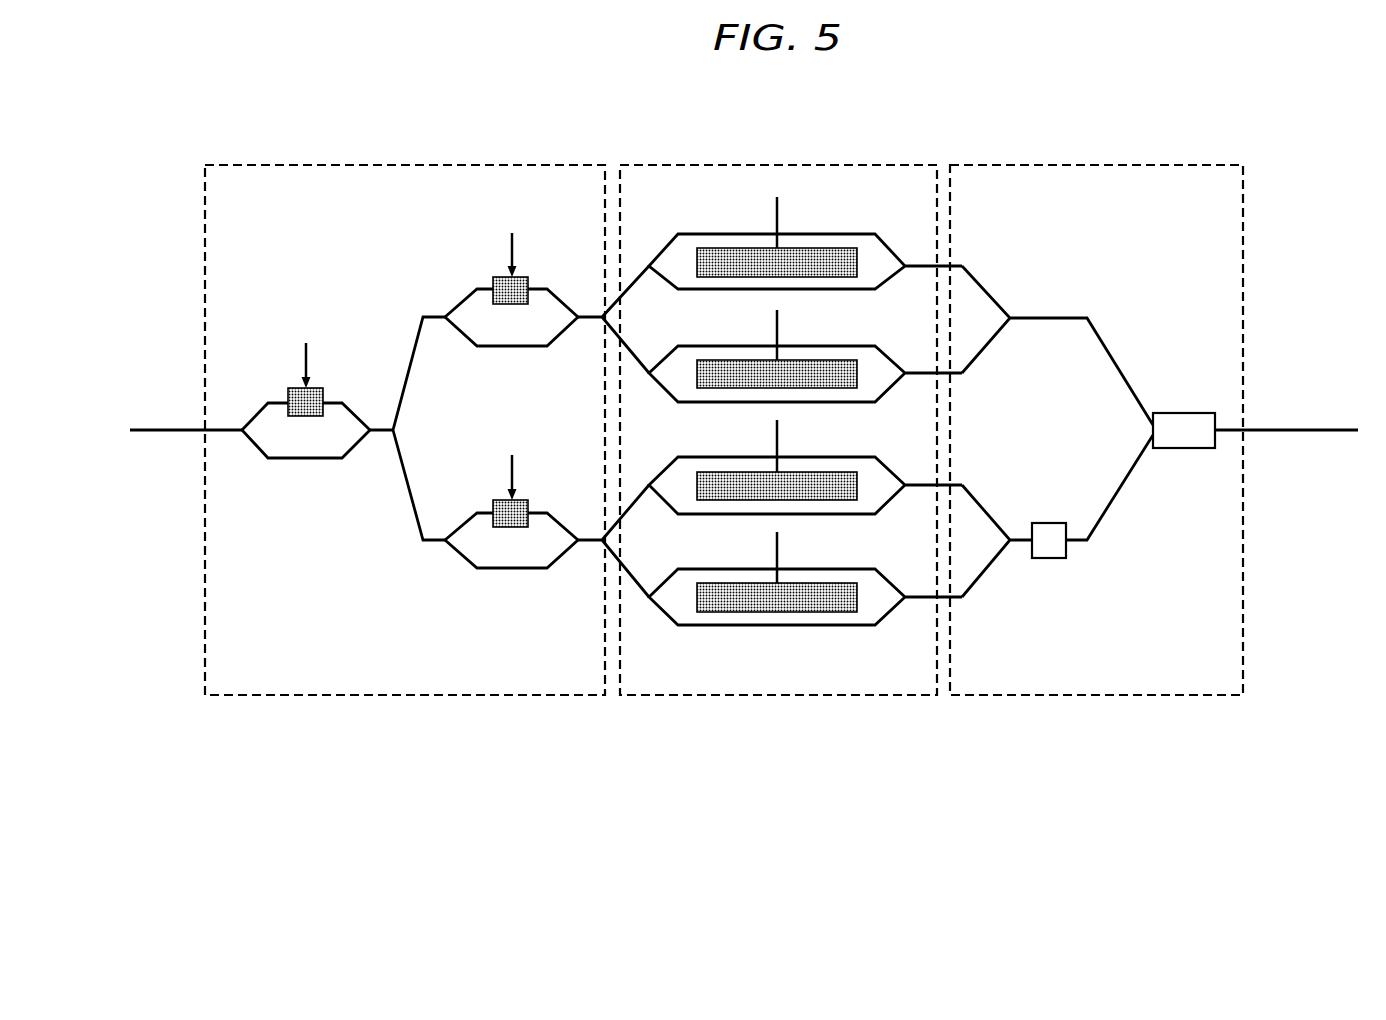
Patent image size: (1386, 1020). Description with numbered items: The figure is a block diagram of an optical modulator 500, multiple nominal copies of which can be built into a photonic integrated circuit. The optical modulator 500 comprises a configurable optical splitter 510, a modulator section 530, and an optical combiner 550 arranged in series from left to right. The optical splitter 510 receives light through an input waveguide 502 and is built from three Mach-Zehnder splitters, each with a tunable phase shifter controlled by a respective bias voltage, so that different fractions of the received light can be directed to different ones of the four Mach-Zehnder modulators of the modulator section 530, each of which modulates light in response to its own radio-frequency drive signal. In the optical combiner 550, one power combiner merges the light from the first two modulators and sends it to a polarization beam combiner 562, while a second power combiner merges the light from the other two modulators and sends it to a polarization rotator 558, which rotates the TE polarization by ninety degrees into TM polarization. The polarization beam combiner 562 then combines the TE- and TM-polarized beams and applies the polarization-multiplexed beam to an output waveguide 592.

The optical modulator 500 is at (791, 93).
The input waveguide 502 is at (162, 431).
The configurable optical splitter 510 is at (512, 164).
The modulator section 530 is at (852, 164).
The optical combiner 550 is at (1149, 164).
The polarization rotator 558 is at (1048, 523).
The polarization beam combiner 562 is at (1172, 413).
The output waveguide 592 is at (1287, 429).